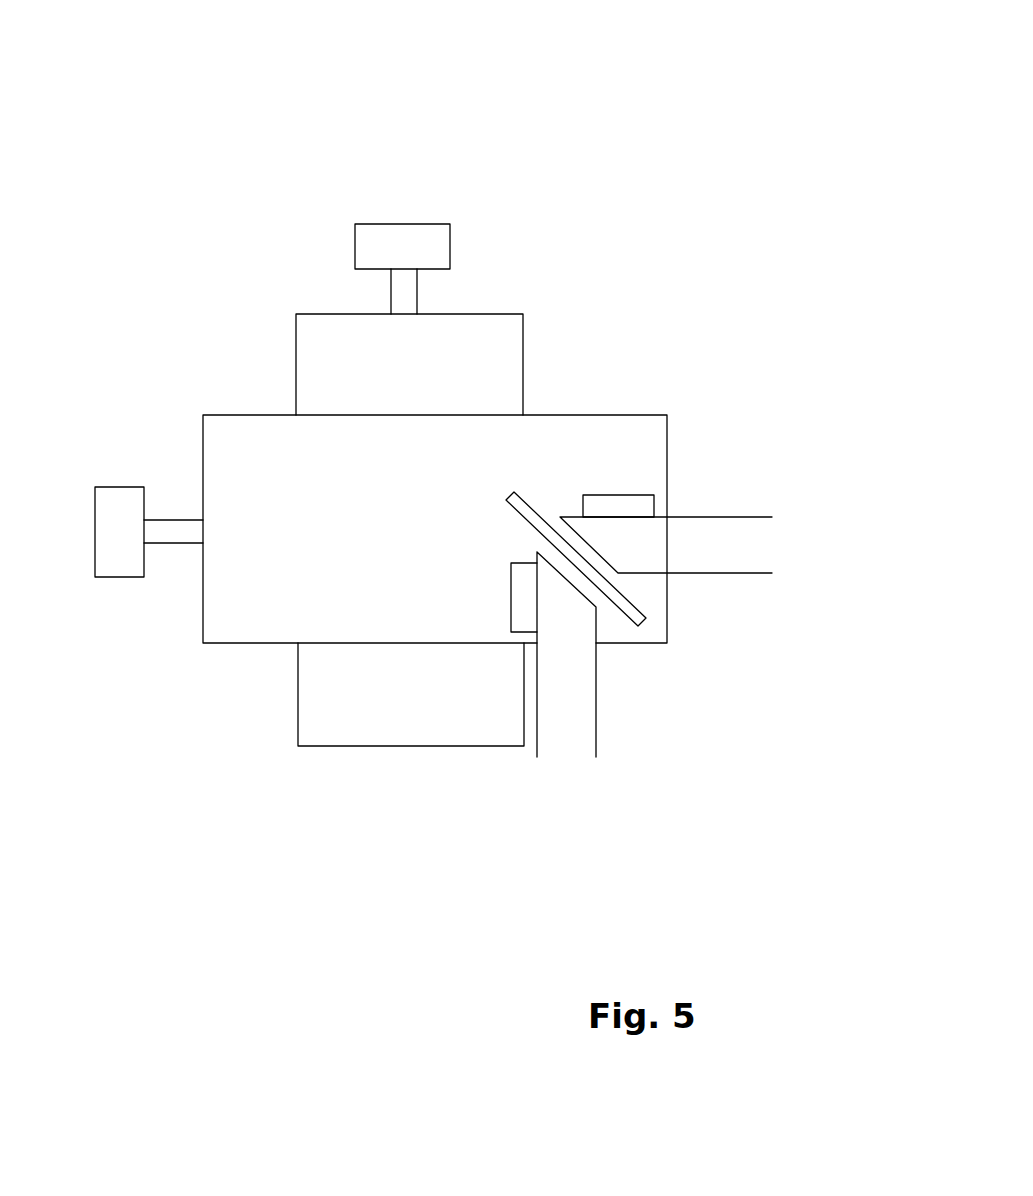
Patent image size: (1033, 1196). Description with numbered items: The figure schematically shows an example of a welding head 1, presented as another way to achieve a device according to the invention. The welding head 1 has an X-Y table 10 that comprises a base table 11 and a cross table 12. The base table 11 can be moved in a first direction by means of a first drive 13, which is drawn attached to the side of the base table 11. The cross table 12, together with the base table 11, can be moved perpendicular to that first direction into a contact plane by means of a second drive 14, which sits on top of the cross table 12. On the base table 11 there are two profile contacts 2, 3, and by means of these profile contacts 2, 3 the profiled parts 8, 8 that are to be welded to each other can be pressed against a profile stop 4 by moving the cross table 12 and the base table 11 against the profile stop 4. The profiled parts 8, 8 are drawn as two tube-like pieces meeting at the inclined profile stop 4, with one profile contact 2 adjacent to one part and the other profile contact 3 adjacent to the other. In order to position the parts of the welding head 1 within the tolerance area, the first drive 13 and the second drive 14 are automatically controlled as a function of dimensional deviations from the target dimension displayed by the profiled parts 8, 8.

The welding head 1 is at (656, 92).
The profile contact 2 is at (606, 507).
The profile contact 3 is at (520, 602).
The profile stop 4 is at (522, 508).
The profiled part 8 is at (587, 716).
The X-Y table 10 is at (221, 296).
The base table 11 is at (255, 610).
The cross table 12 is at (500, 356).
The first drive 13 is at (117, 512).
The second drive 14 is at (398, 233).